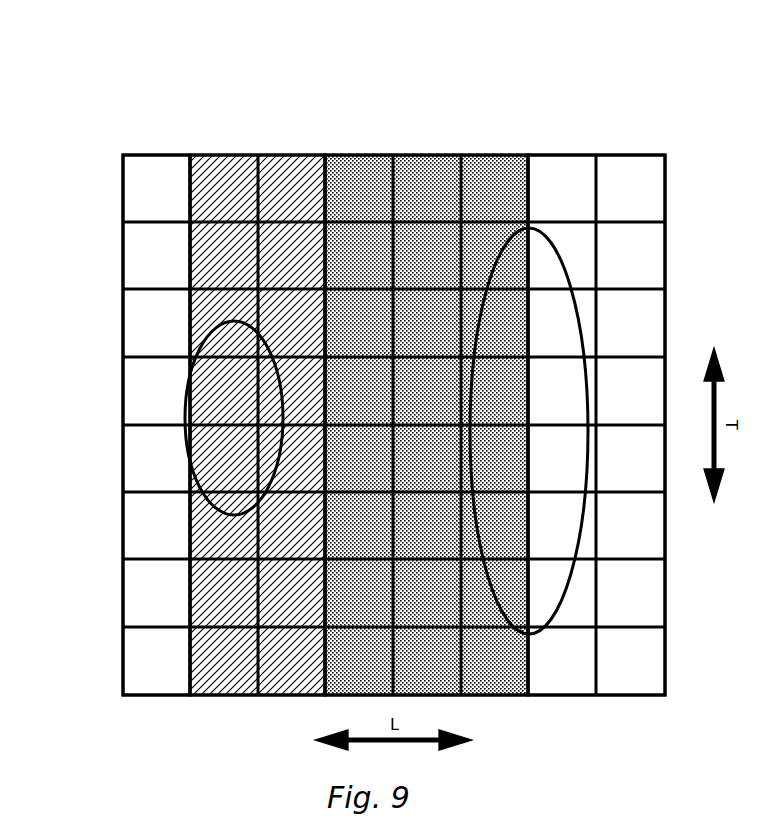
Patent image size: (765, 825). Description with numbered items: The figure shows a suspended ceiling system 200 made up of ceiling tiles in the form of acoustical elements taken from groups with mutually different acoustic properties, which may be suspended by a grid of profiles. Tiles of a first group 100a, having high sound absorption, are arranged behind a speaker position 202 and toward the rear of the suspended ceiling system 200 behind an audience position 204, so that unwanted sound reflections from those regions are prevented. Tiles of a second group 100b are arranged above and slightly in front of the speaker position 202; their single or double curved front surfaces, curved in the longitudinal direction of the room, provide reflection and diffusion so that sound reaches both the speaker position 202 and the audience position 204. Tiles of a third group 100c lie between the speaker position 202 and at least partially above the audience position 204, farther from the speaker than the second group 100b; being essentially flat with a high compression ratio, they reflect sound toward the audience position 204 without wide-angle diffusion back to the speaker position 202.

The suspended ceiling system 200 is at (127, 110).
The first group of acoustical elements 100a is at (160, 172).
The second group of acoustical elements 100b is at (283, 177).
The third group of acoustical elements 100c is at (425, 176).
The speaker position 202 is at (183, 405).
The audience position 204 is at (590, 378).